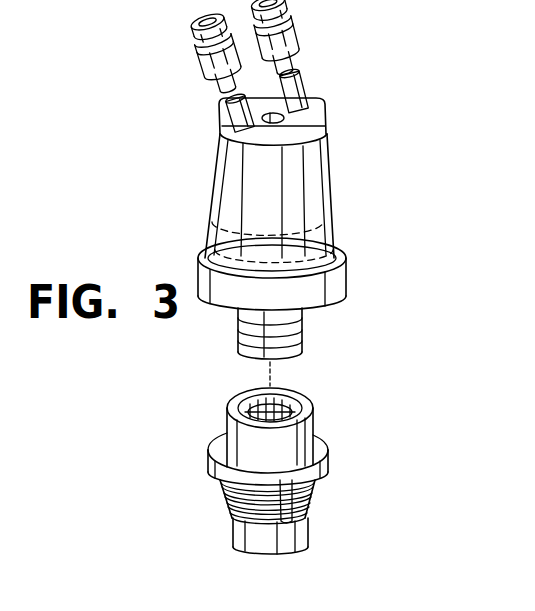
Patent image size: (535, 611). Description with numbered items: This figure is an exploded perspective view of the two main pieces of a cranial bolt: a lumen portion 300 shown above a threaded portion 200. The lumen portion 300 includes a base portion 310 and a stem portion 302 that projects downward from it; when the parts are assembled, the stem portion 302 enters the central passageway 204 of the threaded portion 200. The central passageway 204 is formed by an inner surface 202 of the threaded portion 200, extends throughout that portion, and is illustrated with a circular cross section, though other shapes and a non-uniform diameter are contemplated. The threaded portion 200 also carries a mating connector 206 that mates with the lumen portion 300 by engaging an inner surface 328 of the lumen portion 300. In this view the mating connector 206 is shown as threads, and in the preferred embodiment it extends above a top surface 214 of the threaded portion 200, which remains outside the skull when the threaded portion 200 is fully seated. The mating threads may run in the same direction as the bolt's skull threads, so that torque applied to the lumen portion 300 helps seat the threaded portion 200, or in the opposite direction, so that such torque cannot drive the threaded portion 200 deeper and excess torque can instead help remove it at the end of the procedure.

The lumen portion 300 is at (342, 93).
The base portion 310 is at (232, 179).
The stem portion 302 is at (249, 323).
The inner surface 328 is at (323, 292).
The threaded portion 200 is at (214, 489).
The inner surface 202 is at (262, 399).
The central passageway 204 is at (296, 404).
The mating connector 206 is at (220, 438).
The top surface 214 is at (326, 443).